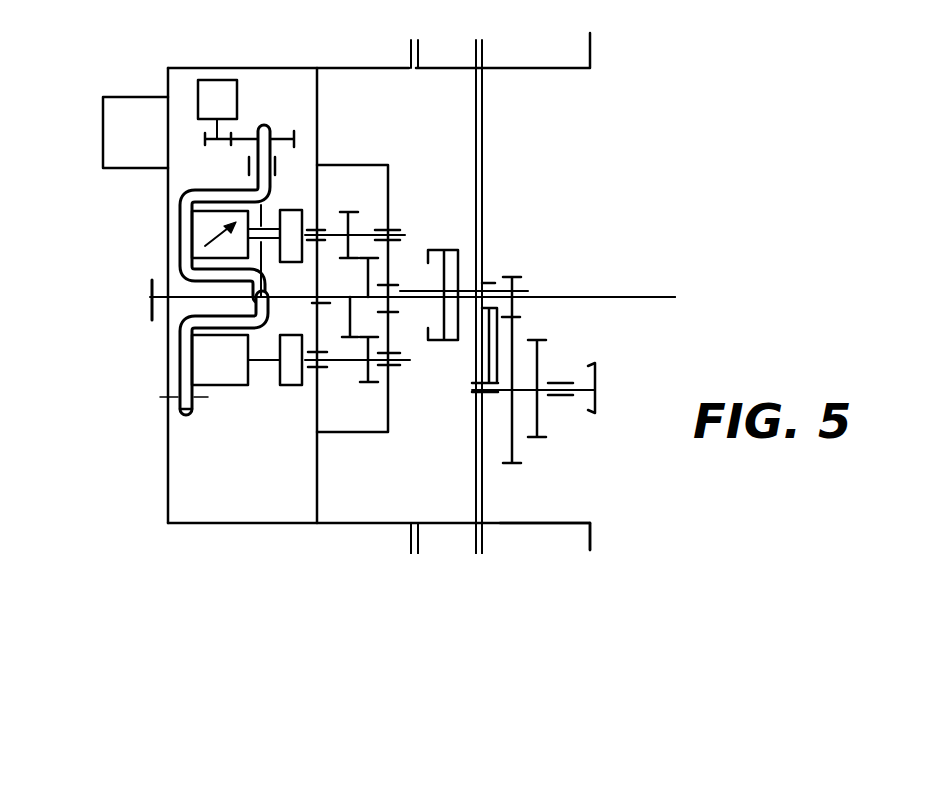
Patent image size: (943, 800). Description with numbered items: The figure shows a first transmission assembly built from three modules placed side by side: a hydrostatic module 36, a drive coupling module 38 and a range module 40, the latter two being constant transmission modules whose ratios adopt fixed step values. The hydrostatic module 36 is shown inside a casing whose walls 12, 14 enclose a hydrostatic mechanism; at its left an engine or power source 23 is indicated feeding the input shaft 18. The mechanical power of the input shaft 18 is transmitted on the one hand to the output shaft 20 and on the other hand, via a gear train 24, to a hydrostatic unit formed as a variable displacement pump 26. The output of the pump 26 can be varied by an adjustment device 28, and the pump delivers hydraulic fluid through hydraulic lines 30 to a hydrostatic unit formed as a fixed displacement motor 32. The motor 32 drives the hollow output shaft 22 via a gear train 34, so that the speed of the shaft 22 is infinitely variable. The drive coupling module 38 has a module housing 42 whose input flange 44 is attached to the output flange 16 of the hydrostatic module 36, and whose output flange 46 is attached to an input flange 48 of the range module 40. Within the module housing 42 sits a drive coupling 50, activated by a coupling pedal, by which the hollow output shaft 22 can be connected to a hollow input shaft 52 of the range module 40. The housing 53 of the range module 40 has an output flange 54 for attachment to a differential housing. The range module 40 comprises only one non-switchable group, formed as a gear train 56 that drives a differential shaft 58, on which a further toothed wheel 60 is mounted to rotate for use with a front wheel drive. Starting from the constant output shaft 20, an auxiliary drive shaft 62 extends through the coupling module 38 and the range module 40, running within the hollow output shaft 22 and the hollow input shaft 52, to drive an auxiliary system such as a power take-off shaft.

The transmission housing 12 is at (168, 433).
The housing bottom wall 14 is at (228, 524).
The output flange 16 is at (410, 542).
The input shaft 18 is at (163, 300).
The output shaft 20 is at (402, 292).
The hollow output shaft 22 is at (406, 292).
The engine 23 is at (112, 148).
The gear train 24 is at (350, 265).
The variable displacement pump 26 is at (195, 222).
The adjustment device 28 is at (216, 80).
The hydraulic lines 30 is at (185, 253).
The fixed displacement motor 32 is at (198, 366).
The gear train 34 is at (368, 320).
The hydrostatic module 36 is at (272, 603).
The drive coupling module 38 is at (462, 634).
The range module 40 is at (567, 630).
The module housing 42 is at (452, 520).
The input flange 44 is at (420, 540).
The output flange 46 is at (477, 540).
The input flange 48 is at (483, 540).
The drive coupling 50 is at (450, 247).
The hollow input shaft 52 is at (485, 288).
The housing 53 is at (543, 526).
The output flange 54 is at (593, 540).
The gear train 56 is at (513, 348).
The differential shaft 58 is at (543, 393).
The toothed wheel 60 is at (537, 420).
The auxiliary drive shaft 62 is at (636, 296).